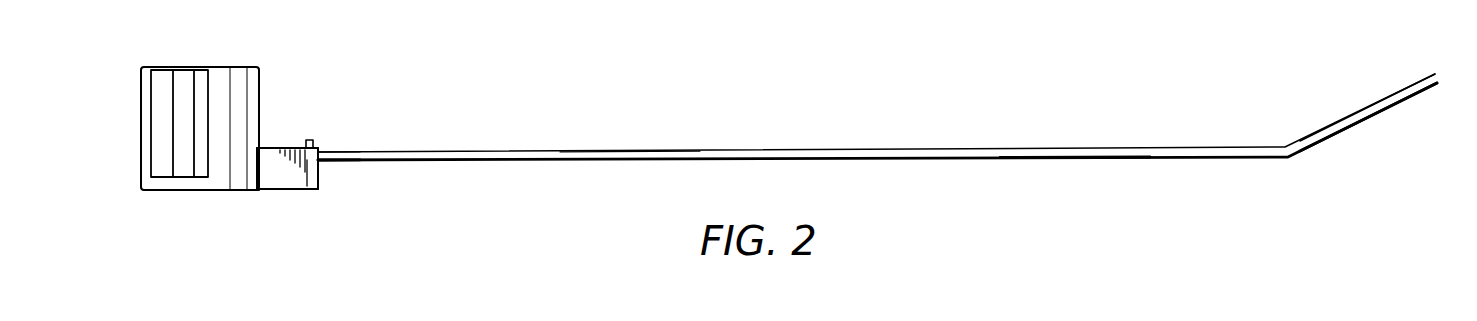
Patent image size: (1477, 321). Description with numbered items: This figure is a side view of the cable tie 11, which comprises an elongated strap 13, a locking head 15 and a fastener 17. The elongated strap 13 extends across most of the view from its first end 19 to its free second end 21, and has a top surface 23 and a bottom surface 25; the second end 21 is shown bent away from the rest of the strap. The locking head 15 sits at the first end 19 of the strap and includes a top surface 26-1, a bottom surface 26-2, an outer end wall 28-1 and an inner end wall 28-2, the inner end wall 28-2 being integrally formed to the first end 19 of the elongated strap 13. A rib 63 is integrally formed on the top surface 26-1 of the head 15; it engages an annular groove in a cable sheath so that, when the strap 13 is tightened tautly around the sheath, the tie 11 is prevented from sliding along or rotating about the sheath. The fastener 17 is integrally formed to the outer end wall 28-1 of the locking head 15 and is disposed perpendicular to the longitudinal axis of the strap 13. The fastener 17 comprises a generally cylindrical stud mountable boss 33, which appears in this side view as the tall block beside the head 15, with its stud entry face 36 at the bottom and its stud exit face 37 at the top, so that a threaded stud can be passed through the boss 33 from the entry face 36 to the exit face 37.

The cable tie 11 is at (473, 203).
The elongated strap 13 is at (921, 159).
The locking head 15 is at (280, 199).
The fastener 17 is at (172, 197).
The first end 19 is at (328, 153).
The second end 21 is at (1413, 92).
The top surface 23 is at (612, 150).
The bottom surface 25 is at (1080, 160).
The top surface 26-1 is at (270, 147).
The bottom surface 26-2 is at (307, 190).
The outer end wall 28-1 is at (253, 192).
The inner end wall 28-2 is at (313, 172).
The stud mountable boss 33 is at (238, 85).
The stud entry face 36 is at (215, 192).
The stud exit face 37 is at (215, 67).
The rib 63 is at (308, 138).